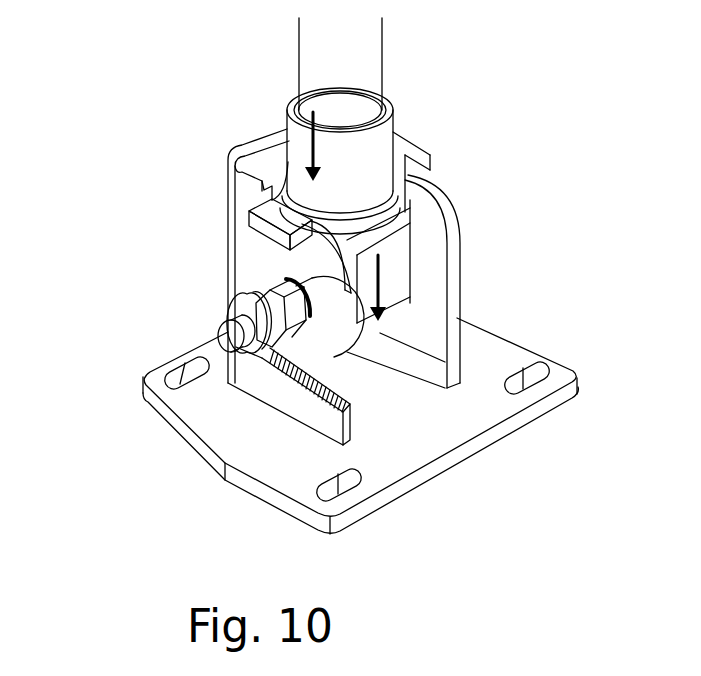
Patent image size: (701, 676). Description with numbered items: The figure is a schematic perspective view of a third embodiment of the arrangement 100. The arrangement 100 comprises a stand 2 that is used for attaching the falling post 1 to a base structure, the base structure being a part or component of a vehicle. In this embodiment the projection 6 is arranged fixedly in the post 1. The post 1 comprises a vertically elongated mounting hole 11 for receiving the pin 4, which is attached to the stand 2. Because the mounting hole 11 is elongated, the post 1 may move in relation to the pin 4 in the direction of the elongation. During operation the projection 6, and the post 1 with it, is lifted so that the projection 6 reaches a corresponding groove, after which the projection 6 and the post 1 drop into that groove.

The arrangement 100 is at (94, 130).
The post 1 is at (352, 52).
The stand 2 is at (414, 466).
The pin 4 is at (232, 336).
The projection 6 is at (405, 152).
The mounting hole 11 is at (305, 333).